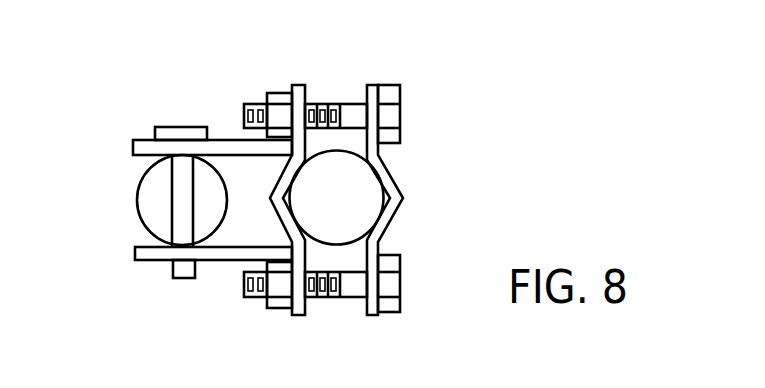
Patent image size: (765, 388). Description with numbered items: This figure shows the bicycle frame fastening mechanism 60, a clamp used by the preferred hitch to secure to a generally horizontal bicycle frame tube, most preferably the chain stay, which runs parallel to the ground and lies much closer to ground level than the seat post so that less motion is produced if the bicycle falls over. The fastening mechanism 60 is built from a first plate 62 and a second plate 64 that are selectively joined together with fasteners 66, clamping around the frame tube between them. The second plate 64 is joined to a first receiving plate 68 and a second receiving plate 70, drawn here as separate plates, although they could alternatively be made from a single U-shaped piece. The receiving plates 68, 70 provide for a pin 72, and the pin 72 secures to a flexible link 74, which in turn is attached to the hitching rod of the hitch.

The bicycle frame fastening mechanism 60 is at (391, 42).
The first plate 62 is at (397, 218).
The second plate 64 is at (287, 221).
The fasteners 66 is at (390, 120).
The first receiving plate 68 is at (150, 145).
The second receiving plate 70 is at (158, 255).
The pin 72 is at (182, 131).
The flexible link 74 is at (137, 195).